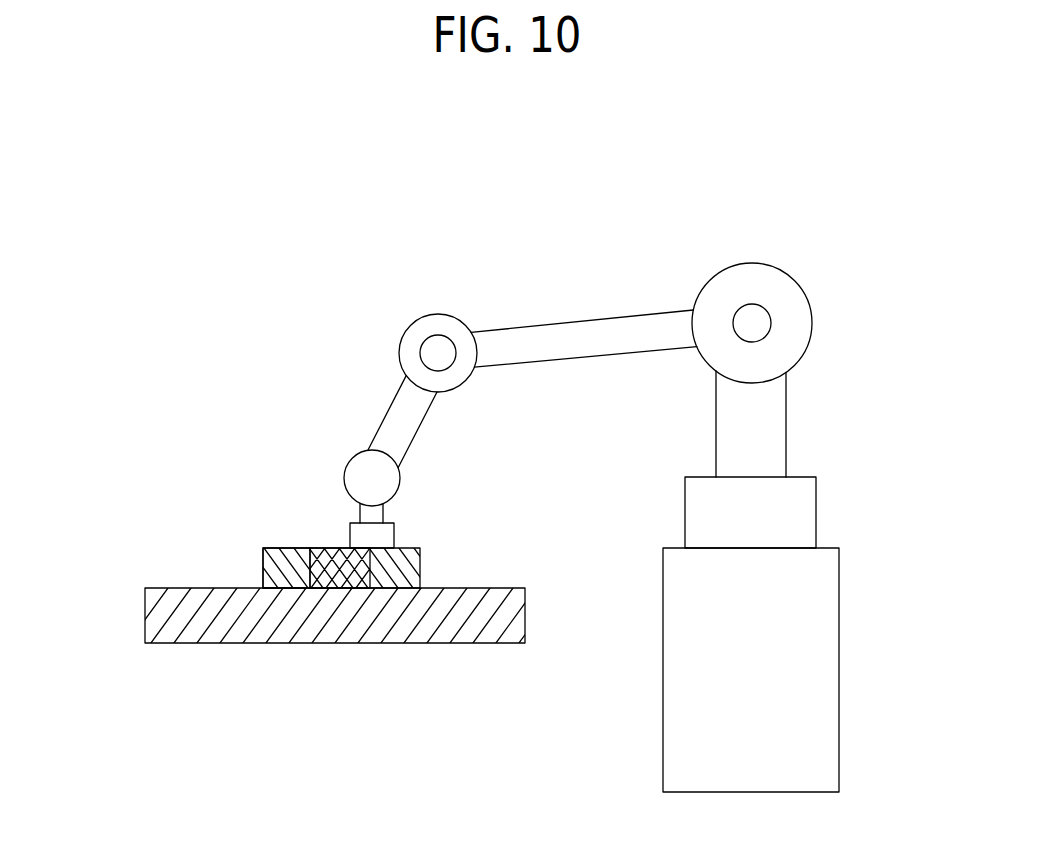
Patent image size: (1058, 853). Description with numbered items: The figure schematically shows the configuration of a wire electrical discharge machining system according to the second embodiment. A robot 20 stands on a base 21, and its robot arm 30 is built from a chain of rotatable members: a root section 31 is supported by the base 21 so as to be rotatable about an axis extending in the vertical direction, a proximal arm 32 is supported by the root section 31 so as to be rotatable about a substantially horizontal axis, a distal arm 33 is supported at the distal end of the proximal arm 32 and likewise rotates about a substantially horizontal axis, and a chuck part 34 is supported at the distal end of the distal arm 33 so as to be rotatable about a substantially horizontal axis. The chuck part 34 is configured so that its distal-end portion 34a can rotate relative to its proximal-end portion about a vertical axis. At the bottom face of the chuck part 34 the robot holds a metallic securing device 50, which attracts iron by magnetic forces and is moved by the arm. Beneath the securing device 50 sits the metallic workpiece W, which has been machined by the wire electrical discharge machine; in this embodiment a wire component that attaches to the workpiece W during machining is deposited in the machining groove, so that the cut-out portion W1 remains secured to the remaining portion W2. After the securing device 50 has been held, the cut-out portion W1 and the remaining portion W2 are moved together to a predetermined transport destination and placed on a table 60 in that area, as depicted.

The robot 20 is at (618, 470).
The base 21 is at (839, 651).
The robot arm 30 is at (599, 378).
The root section 31 is at (786, 423).
The proximal arm 32 is at (580, 358).
The distal arm 33 is at (393, 398).
The chuck part 34 is at (357, 513).
The distal-end portion 34a is at (387, 523).
The securing device 50 is at (395, 535).
The workpiece W is at (354, 536).
The cut-out portion W1 is at (333, 548).
The remaining portion W2 is at (262, 558).
The table 60 is at (145, 610).